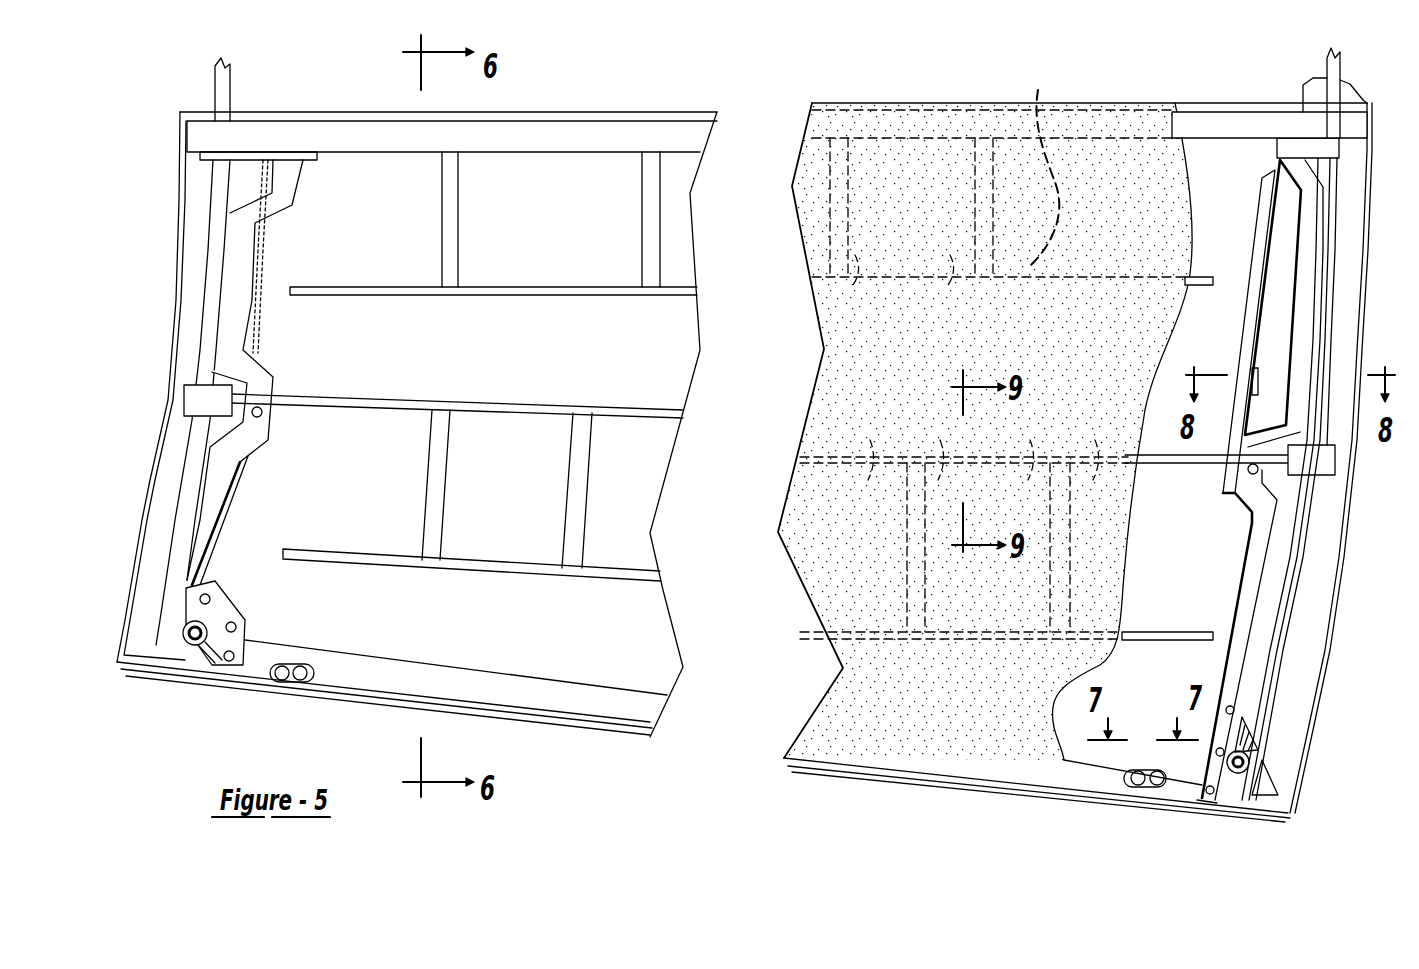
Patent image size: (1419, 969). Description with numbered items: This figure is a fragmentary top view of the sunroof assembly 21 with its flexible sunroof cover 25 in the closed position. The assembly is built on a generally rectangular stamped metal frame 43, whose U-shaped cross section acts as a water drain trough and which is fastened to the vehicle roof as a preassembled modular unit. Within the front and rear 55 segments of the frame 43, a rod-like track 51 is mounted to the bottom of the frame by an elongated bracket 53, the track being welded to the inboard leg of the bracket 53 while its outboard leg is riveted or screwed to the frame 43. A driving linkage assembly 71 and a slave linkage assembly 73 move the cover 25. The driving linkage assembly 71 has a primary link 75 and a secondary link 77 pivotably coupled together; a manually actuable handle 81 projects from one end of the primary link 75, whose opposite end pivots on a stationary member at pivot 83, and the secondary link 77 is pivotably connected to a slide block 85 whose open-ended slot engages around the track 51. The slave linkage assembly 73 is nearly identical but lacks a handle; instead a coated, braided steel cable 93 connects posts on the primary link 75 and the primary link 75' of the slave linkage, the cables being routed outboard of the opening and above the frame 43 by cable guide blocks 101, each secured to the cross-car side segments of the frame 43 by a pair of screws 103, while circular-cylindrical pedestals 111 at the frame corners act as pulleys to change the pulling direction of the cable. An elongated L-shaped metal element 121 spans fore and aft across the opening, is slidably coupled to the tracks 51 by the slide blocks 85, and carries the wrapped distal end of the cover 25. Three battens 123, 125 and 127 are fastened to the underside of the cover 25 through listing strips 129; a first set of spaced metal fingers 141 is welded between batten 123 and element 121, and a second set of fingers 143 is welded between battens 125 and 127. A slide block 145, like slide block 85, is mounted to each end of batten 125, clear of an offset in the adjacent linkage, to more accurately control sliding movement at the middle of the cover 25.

The sunroof assembly 21 is at (1372, 93).
The flexible sunroof cover 25 is at (1122, 170).
The frame 43 is at (1197, 803).
The rod-like track 51 is at (216, 293).
The elongated bracket 53 is at (1348, 320).
The rear segment of frame 55 is at (172, 459).
The driving linkage assembly 71 is at (1234, 193).
The slave linkage assembly 73 is at (303, 237).
The primary link 75 is at (1299, 635).
The primary link of slave linkage assembly 75' is at (229, 402).
The secondary link 77 is at (1313, 234).
The manually actuable handle 81 is at (1240, 335).
The pivot 83 is at (1283, 813).
The slide block 85 is at (226, 166).
The cable 93 is at (1088, 787).
The cable guide block 101 is at (281, 688).
The screw 103 is at (300, 672).
The pedestal 111 is at (190, 647).
The elongated support element 121 is at (1276, 122).
The batten 123 is at (554, 292).
The batten 125 is at (502, 404).
The batten 127 is at (487, 561).
The listing strip 129 is at (1043, 162).
The first set of metal fingers 141 is at (450, 220).
The second set of metal fingers 143 is at (432, 492).
The slide block 145 is at (192, 385).